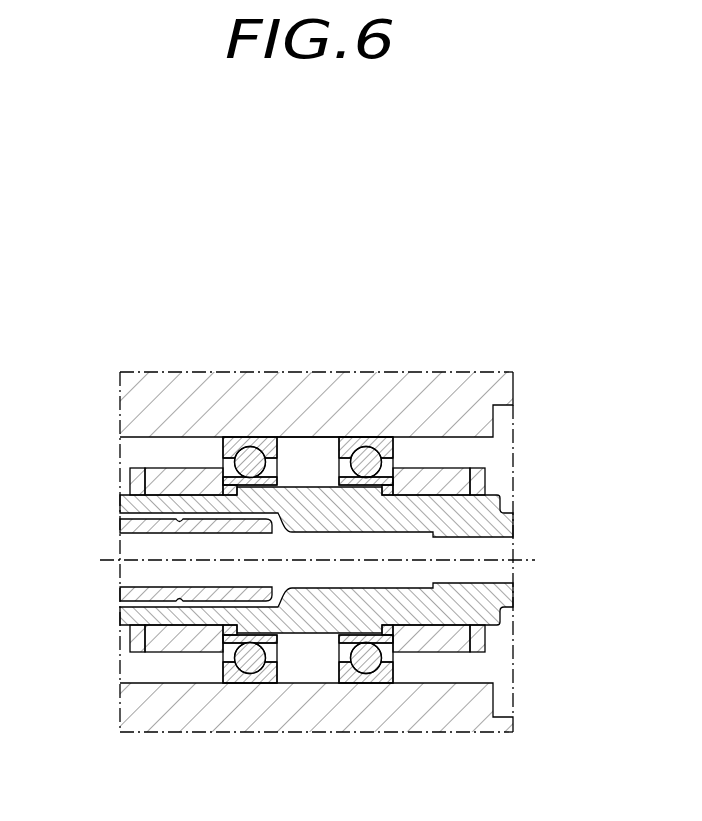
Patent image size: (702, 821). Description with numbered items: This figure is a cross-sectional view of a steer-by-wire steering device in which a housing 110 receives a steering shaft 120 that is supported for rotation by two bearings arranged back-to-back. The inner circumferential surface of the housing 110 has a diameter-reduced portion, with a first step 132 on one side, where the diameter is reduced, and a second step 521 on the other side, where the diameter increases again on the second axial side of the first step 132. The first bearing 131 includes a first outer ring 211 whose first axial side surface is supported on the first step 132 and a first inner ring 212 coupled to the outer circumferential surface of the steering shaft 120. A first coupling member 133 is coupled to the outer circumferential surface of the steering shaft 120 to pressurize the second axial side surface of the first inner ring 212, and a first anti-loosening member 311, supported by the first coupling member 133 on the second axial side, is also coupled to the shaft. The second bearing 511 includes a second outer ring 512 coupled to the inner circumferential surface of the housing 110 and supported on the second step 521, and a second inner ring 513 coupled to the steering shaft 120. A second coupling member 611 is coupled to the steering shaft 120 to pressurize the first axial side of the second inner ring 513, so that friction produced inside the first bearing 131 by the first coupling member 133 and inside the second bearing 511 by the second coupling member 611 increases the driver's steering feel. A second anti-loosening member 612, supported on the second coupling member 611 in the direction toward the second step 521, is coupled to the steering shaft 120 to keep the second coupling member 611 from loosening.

The housing 110 is at (372, 711).
The steering shaft 120 is at (308, 629).
The first bearing 131 is at (386, 428).
The first step 132 is at (337, 443).
The first coupling member 133 is at (448, 490).
The first outer ring 211 is at (362, 442).
The first inner ring 212 is at (391, 475).
The first anti-loosening member 311 is at (486, 485).
The second bearing 511 is at (169, 499).
The second outer ring 512 is at (237, 441).
The second inner ring 513 is at (221, 477).
The second step 521 is at (288, 442).
The second coupling member 611 is at (152, 492).
The second anti-loosening member 612 is at (130, 478).